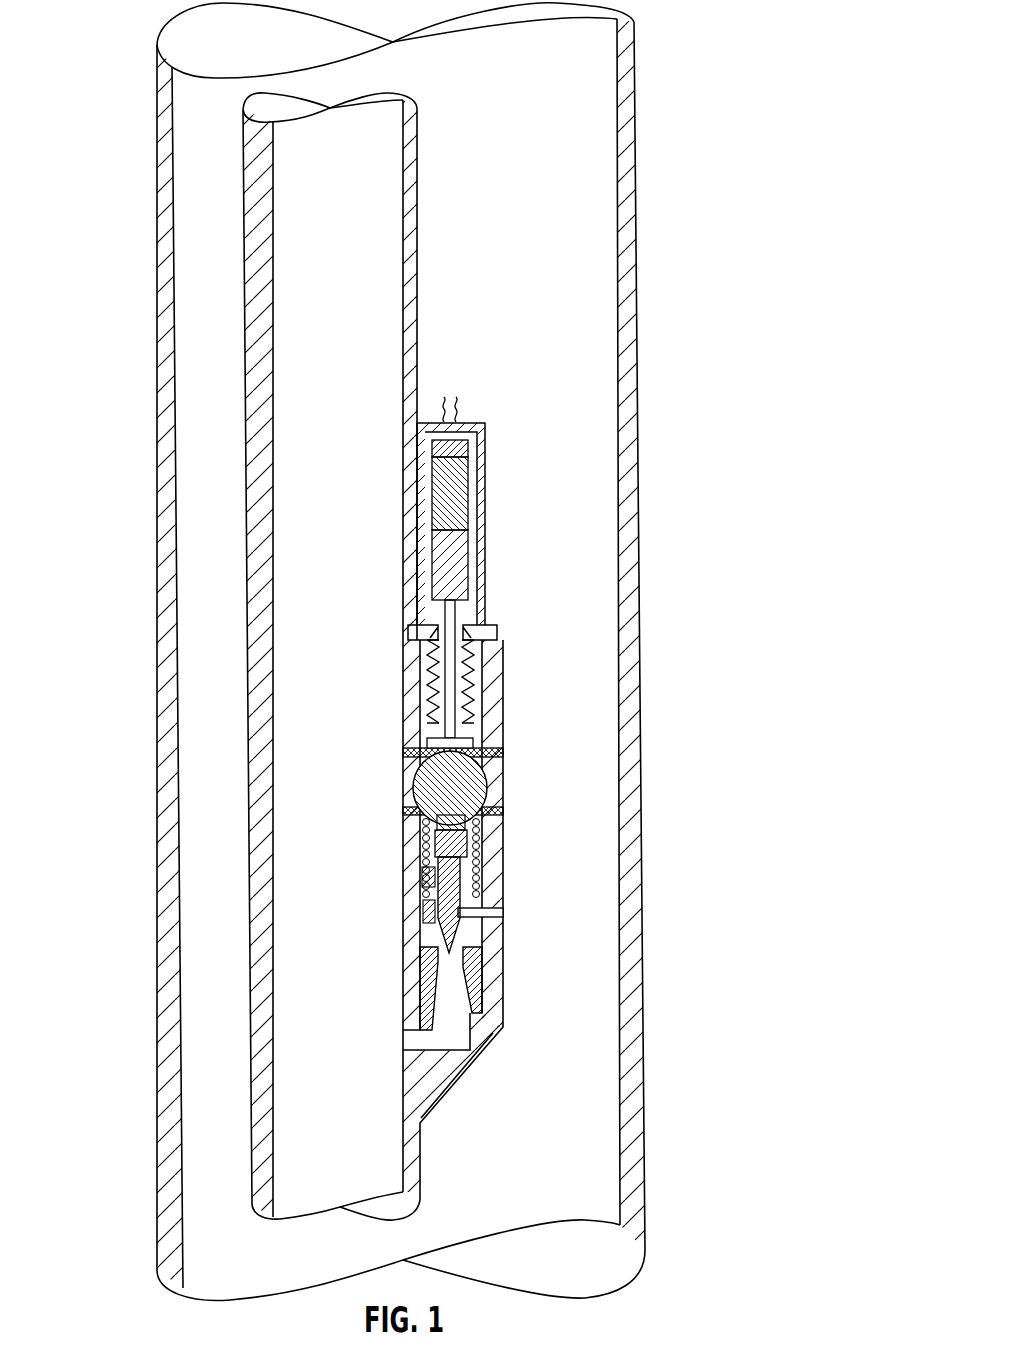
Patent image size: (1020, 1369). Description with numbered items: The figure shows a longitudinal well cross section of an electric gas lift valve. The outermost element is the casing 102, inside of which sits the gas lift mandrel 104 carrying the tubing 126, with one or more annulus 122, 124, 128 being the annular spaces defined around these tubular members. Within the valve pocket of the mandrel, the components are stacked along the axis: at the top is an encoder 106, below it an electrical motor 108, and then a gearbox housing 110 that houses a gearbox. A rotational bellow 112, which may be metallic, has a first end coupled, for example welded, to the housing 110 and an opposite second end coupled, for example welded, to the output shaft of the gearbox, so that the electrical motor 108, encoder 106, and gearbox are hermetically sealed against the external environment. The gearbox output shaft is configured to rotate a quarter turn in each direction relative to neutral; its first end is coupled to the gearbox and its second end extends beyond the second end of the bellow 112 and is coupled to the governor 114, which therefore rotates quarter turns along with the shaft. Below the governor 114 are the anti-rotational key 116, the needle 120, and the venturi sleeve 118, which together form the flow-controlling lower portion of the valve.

The casing 102 is at (157, 120).
The gas lift mandrel 104 is at (243, 215).
The encoder 106 is at (467, 447).
The electrical motor 108 is at (462, 508).
The gearbox housing 110 is at (458, 568).
The rotational bellow 112 is at (473, 703).
The governor 114 is at (470, 778).
The anti-rotational key 116 is at (458, 915).
The venturi sleeve 118 is at (473, 997).
The needle 120 is at (430, 915).
The annulus 122 is at (129, 666).
The annulus 124 is at (225, 665).
The tubing 126 is at (424, 798).
The annulus 128 is at (581, 668).